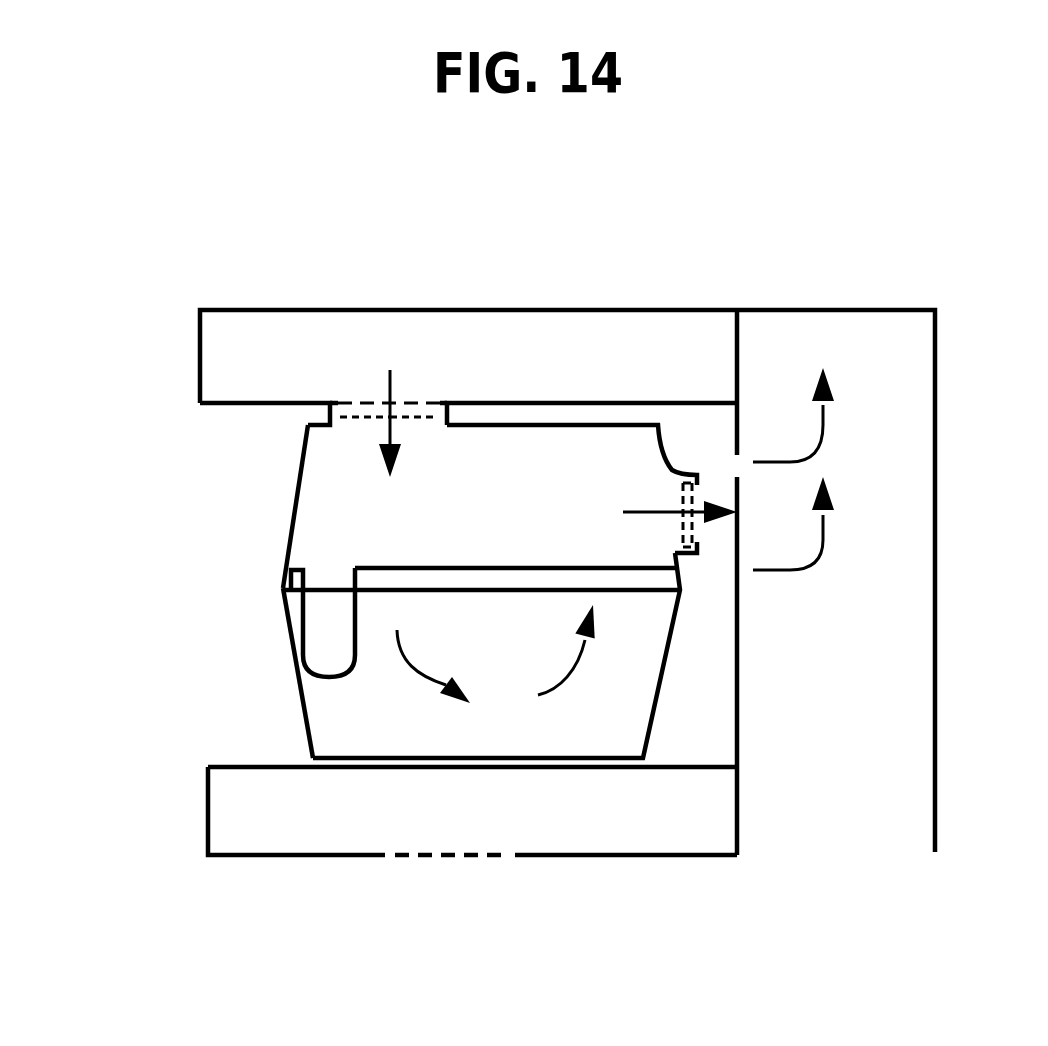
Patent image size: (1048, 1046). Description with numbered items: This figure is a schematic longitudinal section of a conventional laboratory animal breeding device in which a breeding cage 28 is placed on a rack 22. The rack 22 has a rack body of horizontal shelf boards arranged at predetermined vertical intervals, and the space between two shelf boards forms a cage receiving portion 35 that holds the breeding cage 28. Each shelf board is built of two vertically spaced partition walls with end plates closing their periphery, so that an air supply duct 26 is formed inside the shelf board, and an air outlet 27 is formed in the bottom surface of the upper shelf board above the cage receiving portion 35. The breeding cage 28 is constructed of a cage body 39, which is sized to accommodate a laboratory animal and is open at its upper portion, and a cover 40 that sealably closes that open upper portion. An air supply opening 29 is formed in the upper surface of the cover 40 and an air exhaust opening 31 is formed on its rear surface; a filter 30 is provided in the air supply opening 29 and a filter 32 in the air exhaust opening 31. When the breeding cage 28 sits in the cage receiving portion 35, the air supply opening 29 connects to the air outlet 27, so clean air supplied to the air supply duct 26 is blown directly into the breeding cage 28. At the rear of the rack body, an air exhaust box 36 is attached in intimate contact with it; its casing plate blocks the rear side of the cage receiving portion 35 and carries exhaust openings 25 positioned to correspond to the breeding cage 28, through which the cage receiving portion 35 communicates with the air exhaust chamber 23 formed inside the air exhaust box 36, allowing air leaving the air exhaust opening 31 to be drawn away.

The rack 22 is at (262, 572).
The air exhaust chamber 23 is at (915, 682).
The exhaust openings 25 is at (737, 458).
The air supply duct 26 is at (565, 358).
The air outlets 27 is at (415, 402).
The breeding cage 28 is at (290, 640).
The air supply opening 29 is at (440, 425).
The filter 30 is at (350, 425).
The air exhaust opening 31 is at (673, 553).
The filter 32 is at (687, 508).
The cage receiving portion 35 is at (290, 448).
The air exhaust box 36 is at (935, 480).
The cage body 39 is at (300, 715).
The cover 40 is at (293, 512).